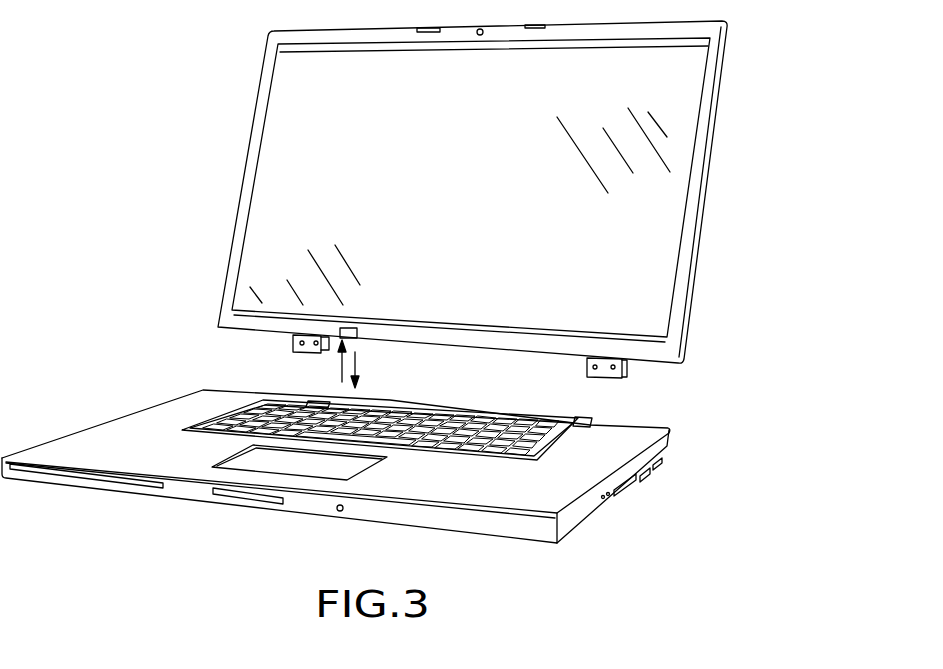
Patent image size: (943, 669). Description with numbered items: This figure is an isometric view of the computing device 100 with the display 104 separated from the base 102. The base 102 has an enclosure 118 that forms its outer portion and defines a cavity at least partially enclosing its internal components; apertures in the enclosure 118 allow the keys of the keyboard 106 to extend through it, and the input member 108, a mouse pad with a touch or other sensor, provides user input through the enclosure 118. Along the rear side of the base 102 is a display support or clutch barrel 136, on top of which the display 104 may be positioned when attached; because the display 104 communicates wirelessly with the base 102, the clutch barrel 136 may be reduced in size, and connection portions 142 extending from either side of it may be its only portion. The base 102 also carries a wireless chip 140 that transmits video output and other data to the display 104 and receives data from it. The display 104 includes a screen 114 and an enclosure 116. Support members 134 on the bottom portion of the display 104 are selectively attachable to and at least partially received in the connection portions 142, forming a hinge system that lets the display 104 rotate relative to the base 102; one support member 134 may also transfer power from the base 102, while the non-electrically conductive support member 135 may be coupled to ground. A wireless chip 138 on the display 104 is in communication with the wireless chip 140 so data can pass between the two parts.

The computing device 100 is at (159, 300).
The base 102 is at (668, 487).
The display 104 is at (726, 216).
The keyboard 106 is at (518, 438).
The input member 108 is at (345, 468).
The screen 114 is at (670, 152).
The enclosure 116 is at (720, 96).
The enclosure 118 is at (127, 460).
The support member 134 is at (625, 370).
The non-electrically conductive support member 135 is at (293, 343).
The clutch barrel 136 is at (513, 414).
The wireless chip 138 is at (357, 334).
The wireless chip 140 is at (320, 397).
The connection portion 142 is at (590, 421).